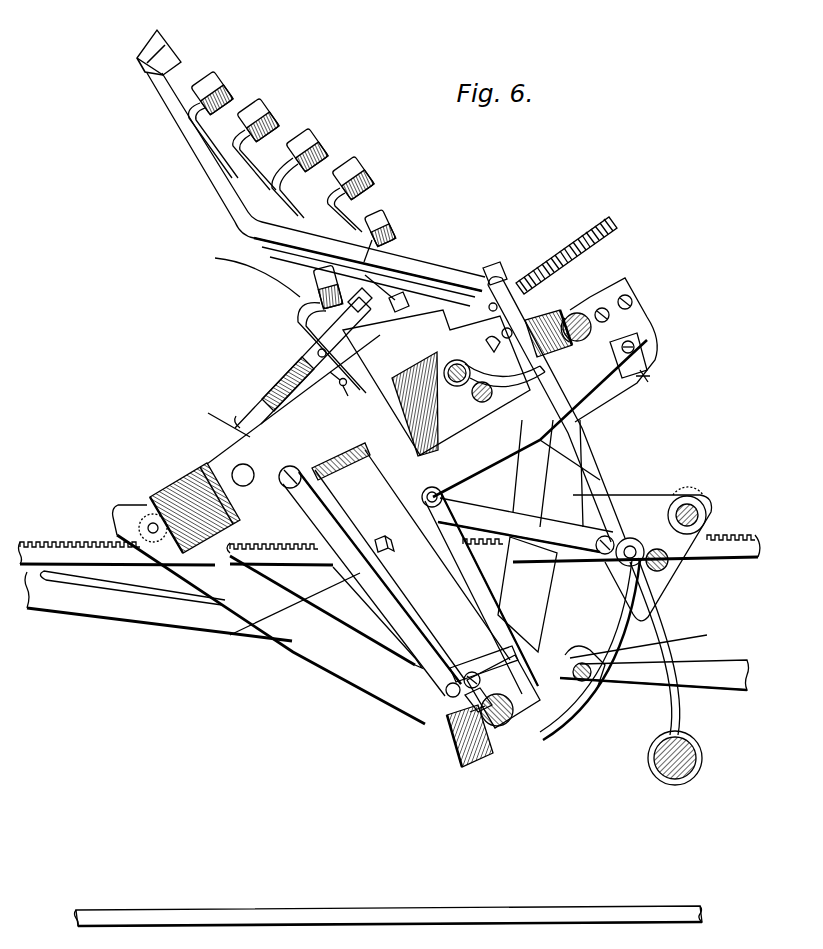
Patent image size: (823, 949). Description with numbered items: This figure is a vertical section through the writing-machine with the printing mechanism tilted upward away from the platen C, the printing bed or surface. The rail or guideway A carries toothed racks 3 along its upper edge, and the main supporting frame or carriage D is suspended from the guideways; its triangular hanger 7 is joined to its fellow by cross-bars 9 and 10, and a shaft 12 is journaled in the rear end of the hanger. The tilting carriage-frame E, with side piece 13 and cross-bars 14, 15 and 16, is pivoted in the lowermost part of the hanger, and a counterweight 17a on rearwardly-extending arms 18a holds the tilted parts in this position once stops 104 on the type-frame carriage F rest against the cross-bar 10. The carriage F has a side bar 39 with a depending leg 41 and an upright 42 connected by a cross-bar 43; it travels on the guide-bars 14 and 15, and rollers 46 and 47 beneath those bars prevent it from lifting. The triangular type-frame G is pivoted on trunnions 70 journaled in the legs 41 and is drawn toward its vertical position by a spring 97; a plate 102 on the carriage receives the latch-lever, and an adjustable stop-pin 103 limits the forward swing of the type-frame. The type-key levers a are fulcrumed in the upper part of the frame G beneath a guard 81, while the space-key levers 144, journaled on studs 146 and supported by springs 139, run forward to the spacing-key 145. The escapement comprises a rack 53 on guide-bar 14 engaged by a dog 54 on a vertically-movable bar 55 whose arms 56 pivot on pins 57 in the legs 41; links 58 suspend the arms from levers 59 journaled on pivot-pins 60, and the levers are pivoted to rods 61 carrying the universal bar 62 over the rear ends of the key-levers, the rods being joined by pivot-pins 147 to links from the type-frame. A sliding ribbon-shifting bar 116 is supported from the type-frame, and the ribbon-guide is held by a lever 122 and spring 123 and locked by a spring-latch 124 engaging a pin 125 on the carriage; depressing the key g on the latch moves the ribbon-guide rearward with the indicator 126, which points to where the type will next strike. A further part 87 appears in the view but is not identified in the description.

The spacing-key 145 is at (168, 47).
The space-key levers 144 is at (198, 164).
The type-key levers a is at (233, 147).
The key g is at (317, 270).
The plate 102 is at (363, 287).
The guard 81 is at (492, 265).
The springs 139 is at (490, 293).
The pivot pins or studs 146 is at (473, 345).
The platen C is at (588, 222).
The cross-bar 43 is at (620, 285).
The cross-bar 15 is at (566, 315).
The roller 47 is at (540, 328).
The side piece 13 is at (583, 420).
The type-frame G is at (436, 382).
The spring 97 is at (400, 404).
The block portion 87 is at (413, 396).
The ribbon-shifting bar 116 is at (457, 386).
The cross-bar 16 is at (483, 403).
The uprights 42 is at (515, 378).
The stop-pin 103 is at (350, 307).
The spring 123 is at (317, 350).
The lever 122 is at (297, 367).
The pin 125 is at (343, 385).
The spring-latch 124 is at (234, 268).
The type-frame carriage F is at (269, 529).
The pivot-pins 57 is at (216, 414).
The pointer or indicator 126 is at (148, 498).
The trunnions 70 is at (240, 472).
The legs 41 is at (300, 455).
The rail or guideway A is at (60, 550).
The toothed racks 3 is at (732, 535).
The main supporting frame or carriage D is at (307, 640).
The arms 56 is at (230, 635).
The links 58 is at (487, 663).
The levers 59 is at (473, 583).
The side bar 39 is at (612, 735).
The rods 61 is at (517, 510).
The tilting carriage-frame E is at (527, 594).
The universal bar 62 is at (608, 543).
The hanger 7 is at (628, 498).
The shaft 12 is at (690, 510).
The cross-bar 9 is at (667, 563).
The pivot-pins 147 is at (633, 567).
The counterweight 17a is at (703, 756).
The pivot-pins 60 is at (560, 712).
The arms 18a is at (690, 706).
The stops 104 is at (660, 638).
The cross-bar 10 is at (592, 682).
The cross-bar or guide-bar 14 is at (503, 727).
The roller 46 is at (452, 748).
The bar 55 is at (446, 690).
The dog 54 is at (470, 703).
The rack 53 is at (462, 718).